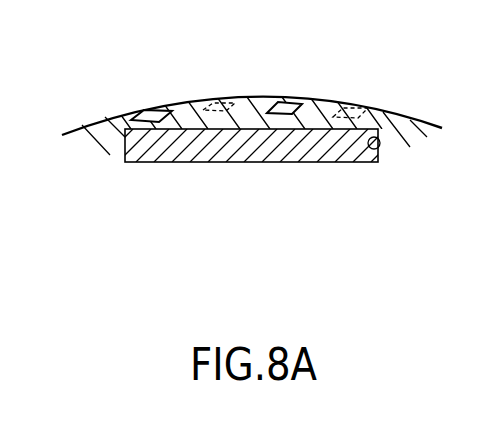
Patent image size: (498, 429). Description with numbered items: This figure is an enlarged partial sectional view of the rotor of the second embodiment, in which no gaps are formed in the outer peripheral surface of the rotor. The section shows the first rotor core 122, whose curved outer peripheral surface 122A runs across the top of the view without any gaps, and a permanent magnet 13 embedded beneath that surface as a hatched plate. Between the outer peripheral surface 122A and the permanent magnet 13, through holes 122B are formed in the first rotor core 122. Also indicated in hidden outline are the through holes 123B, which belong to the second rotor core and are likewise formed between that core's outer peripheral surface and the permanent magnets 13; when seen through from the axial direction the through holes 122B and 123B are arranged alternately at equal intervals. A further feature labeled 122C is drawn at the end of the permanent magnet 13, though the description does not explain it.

The first rotor core 122 is at (110, 121).
The outer peripheral surface 122A is at (243, 99).
The through holes 122B is at (147, 110).
The rounded edge 122C is at (380, 147).
The through holes 123B is at (217, 95).
The permanent magnets 13 is at (272, 163).